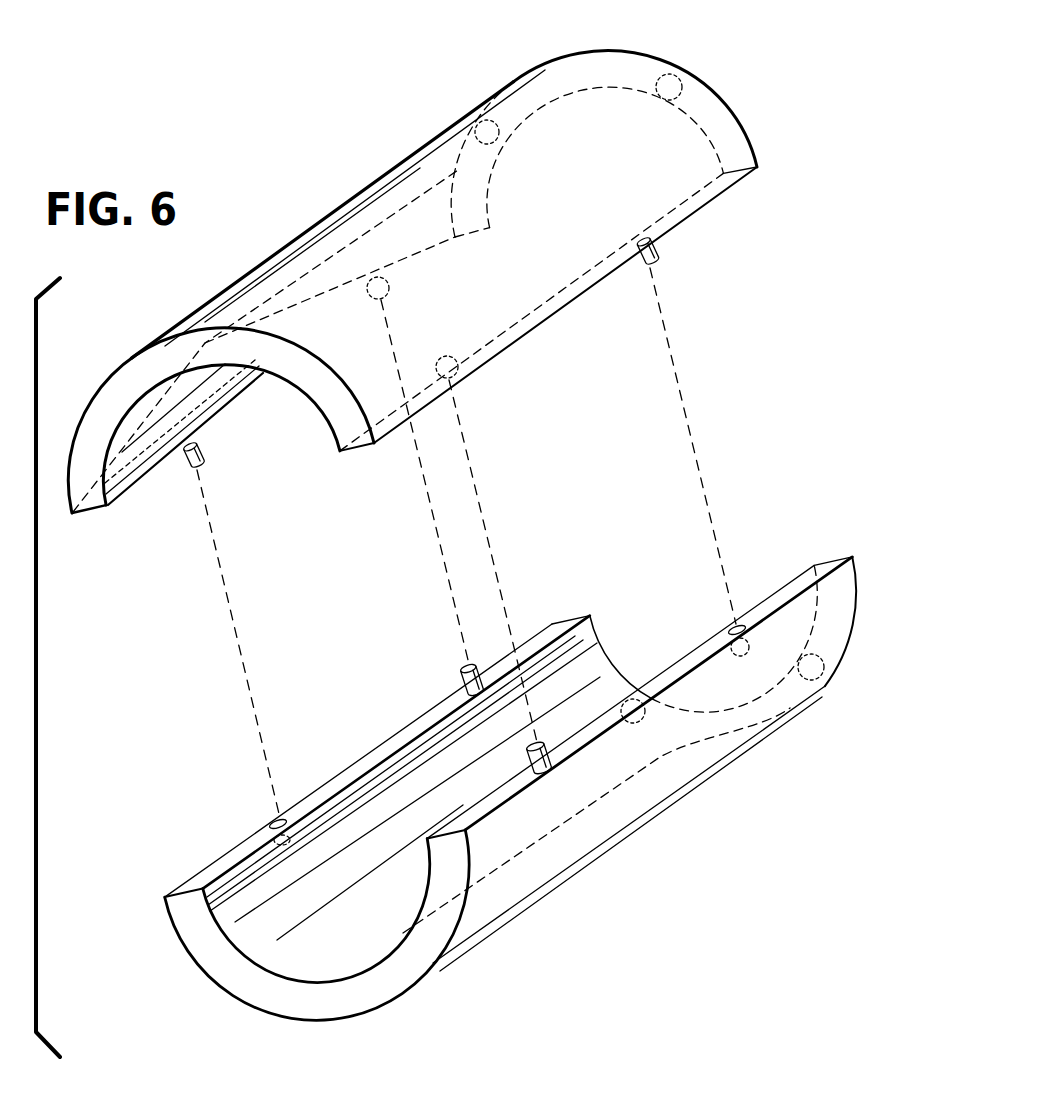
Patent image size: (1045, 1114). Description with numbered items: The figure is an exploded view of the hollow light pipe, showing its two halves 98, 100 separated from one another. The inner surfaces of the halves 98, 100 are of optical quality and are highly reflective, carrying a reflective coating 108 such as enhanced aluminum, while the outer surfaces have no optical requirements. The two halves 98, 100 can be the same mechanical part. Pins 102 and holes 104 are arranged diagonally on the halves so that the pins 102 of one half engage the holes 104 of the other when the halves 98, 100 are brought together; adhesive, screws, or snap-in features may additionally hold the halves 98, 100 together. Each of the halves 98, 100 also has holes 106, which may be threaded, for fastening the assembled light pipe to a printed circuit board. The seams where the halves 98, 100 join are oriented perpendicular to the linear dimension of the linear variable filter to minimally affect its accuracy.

The half of light pipe 98 is at (403, 158).
The half of light pipe 100 is at (603, 853).
The pins 102 is at (462, 672).
The holes 104 is at (273, 823).
The holes 106 is at (826, 690).
The reflective coating 108 is at (217, 393).